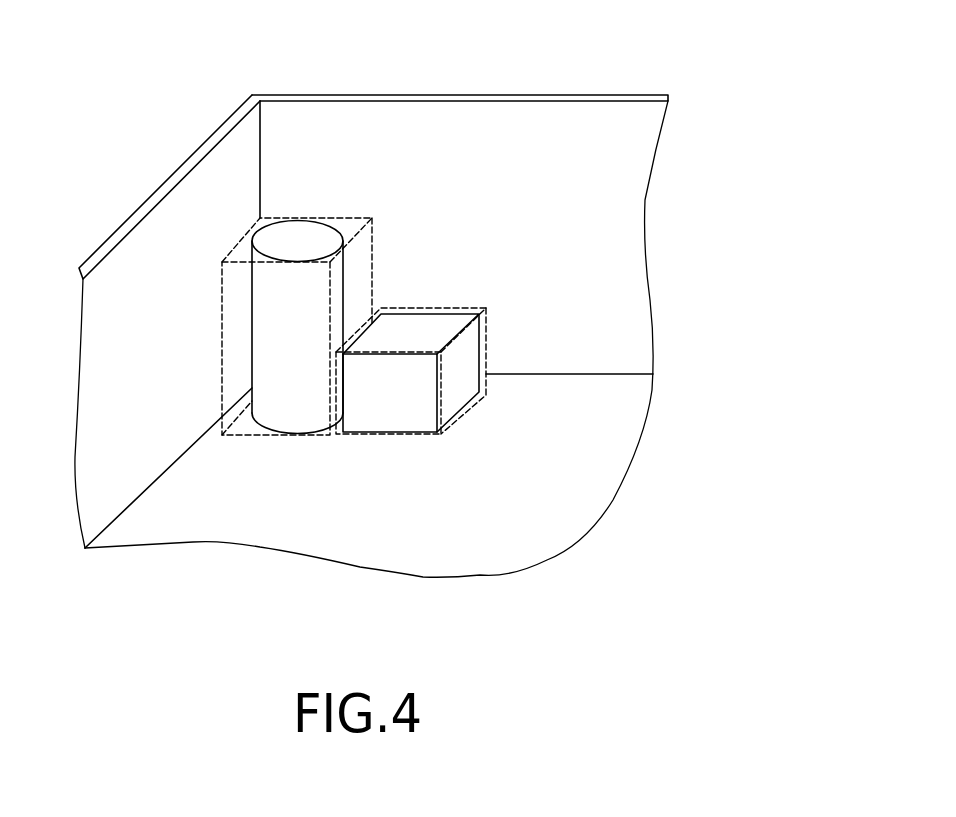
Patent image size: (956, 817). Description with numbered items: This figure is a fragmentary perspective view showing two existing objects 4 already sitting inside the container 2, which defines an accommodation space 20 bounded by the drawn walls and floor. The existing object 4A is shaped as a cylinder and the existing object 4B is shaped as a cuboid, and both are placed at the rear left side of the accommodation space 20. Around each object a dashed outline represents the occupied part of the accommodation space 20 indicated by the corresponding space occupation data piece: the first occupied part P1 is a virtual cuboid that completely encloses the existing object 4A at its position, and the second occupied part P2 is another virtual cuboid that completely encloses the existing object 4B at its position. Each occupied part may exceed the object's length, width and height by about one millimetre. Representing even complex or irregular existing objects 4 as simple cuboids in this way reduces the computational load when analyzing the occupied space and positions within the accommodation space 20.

The container 2 is at (177, 170).
The accommodation space 20 is at (523, 163).
The existing object 4 is at (352, 426).
The existing object 4A is at (292, 418).
The existing object 4B is at (398, 420).
The first occupied part P1 is at (373, 242).
The second occupied part P2 is at (487, 333).